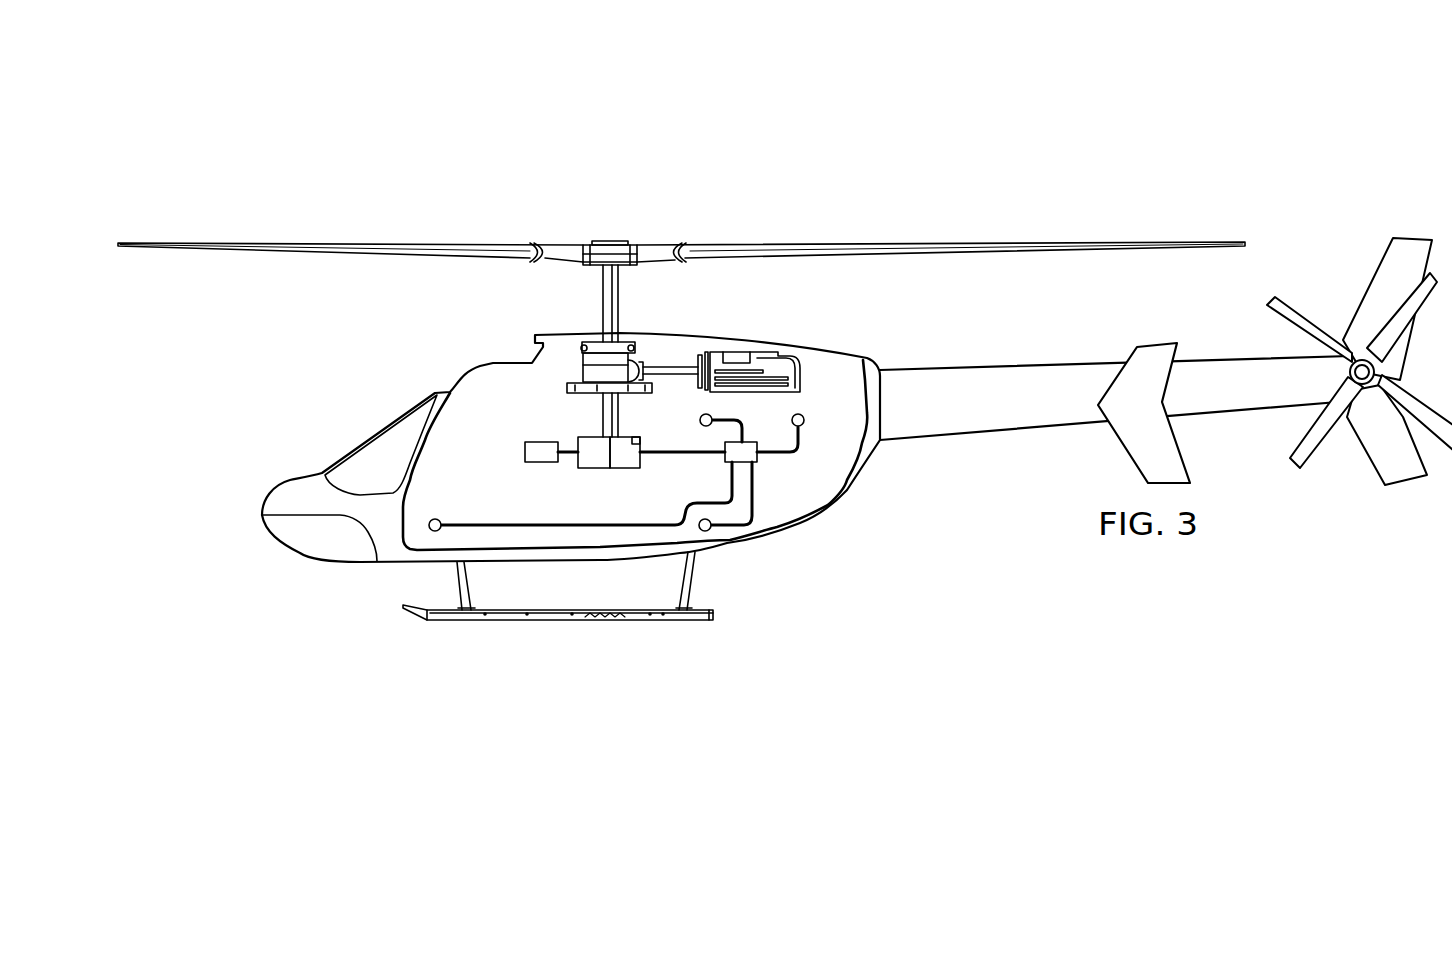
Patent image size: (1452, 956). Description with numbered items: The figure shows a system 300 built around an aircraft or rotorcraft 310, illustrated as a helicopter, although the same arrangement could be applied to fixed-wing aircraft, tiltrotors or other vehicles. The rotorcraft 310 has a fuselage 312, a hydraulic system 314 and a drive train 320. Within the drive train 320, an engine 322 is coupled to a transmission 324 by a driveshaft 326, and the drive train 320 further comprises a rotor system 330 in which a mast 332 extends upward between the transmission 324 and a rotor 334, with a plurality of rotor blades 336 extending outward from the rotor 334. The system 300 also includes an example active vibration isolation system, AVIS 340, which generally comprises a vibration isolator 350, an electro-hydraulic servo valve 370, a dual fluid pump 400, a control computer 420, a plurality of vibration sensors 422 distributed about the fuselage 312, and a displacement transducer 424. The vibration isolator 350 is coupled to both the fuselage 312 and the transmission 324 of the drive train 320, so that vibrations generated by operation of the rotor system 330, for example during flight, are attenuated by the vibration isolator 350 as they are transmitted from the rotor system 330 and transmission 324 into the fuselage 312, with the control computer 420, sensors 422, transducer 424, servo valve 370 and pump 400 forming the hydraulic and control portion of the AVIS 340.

The system 300 is at (432, 118).
The rotorcraft 310 is at (322, 618).
The fuselage 312 is at (793, 527).
The hydraulic system 314 is at (537, 464).
The drive train 320 is at (805, 353).
The engine 322 is at (737, 351).
The transmission 324 is at (578, 353).
The driveshaft 326 is at (663, 366).
The rotor system 330 is at (663, 210).
The mast 332 is at (602, 300).
The rotor 334 is at (608, 242).
The rotor blades 336 is at (305, 243).
The AVIS 340 is at (814, 455).
The vibration isolator 350 is at (567, 387).
The electro-hydraulic servo valve 370 is at (593, 470).
The dual fluid pump 400 is at (627, 470).
The control computer 420 is at (758, 458).
The vibration sensors 422 is at (806, 418).
The displacement transducer 424 is at (637, 435).